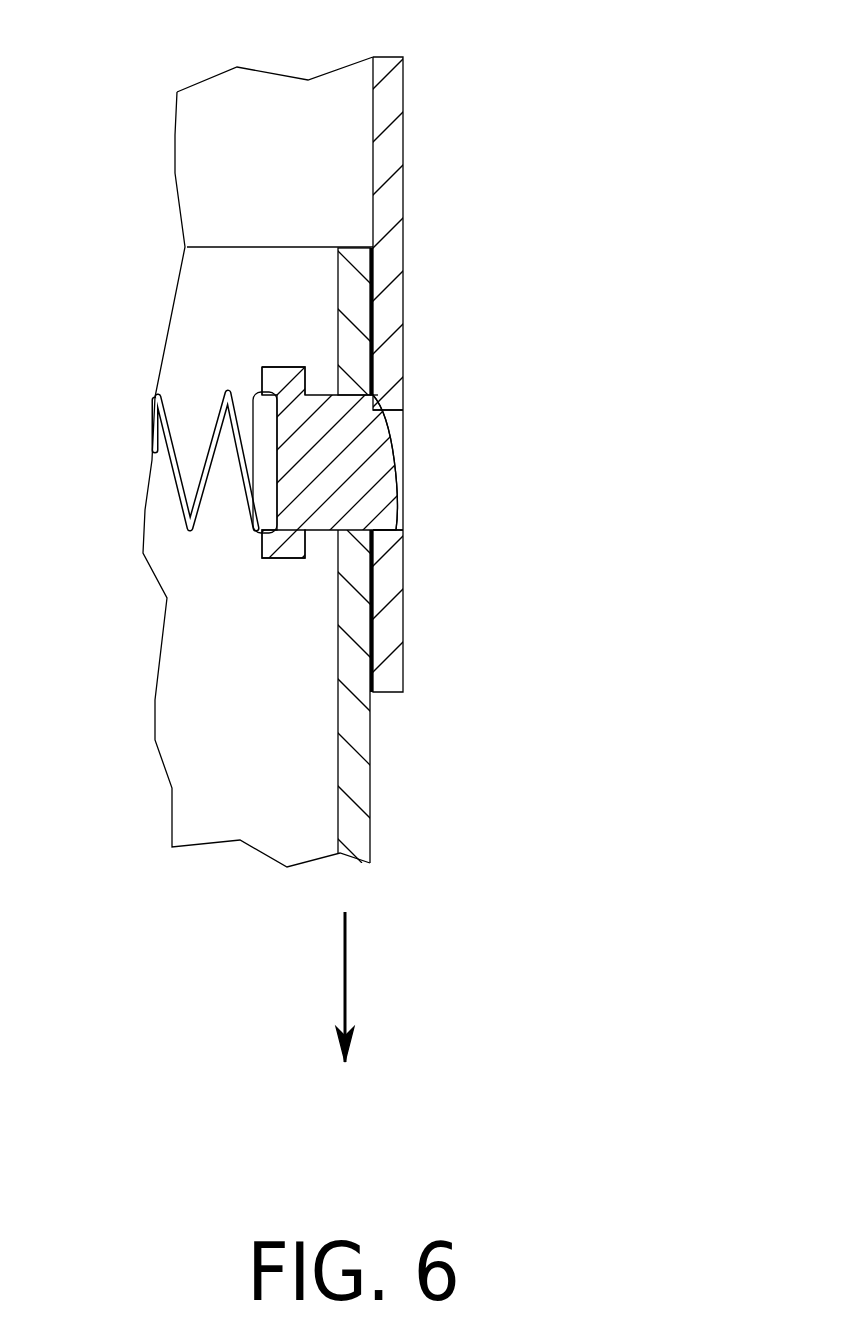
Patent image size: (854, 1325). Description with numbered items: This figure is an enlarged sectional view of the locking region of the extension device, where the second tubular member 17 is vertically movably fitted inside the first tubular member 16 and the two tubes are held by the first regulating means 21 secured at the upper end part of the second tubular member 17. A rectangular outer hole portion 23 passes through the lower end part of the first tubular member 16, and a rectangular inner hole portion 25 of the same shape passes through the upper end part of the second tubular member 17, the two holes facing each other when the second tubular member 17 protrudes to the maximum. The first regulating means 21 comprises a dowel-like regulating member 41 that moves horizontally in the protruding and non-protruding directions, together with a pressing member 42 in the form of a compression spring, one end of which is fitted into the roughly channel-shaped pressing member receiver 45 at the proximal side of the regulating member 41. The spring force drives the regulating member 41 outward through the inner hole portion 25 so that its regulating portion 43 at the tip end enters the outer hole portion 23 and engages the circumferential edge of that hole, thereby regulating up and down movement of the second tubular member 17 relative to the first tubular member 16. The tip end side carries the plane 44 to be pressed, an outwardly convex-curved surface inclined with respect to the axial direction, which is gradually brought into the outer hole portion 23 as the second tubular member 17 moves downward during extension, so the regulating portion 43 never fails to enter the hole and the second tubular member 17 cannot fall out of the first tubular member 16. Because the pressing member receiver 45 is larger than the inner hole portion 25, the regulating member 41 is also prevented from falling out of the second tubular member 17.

The first tubular member 16 is at (441, 288).
The second tubular member 17 is at (383, 892).
The first regulating means 21 is at (193, 375).
The outer hole portion 23 is at (388, 425).
The inner hole portion 25 is at (378, 401).
The regulating member 41 is at (363, 517).
The pressing member 42 is at (173, 467).
The regulating portion 43 is at (370, 500).
The plane to be pressed 44 is at (390, 470).
The pressing member receiver 45 is at (284, 367).